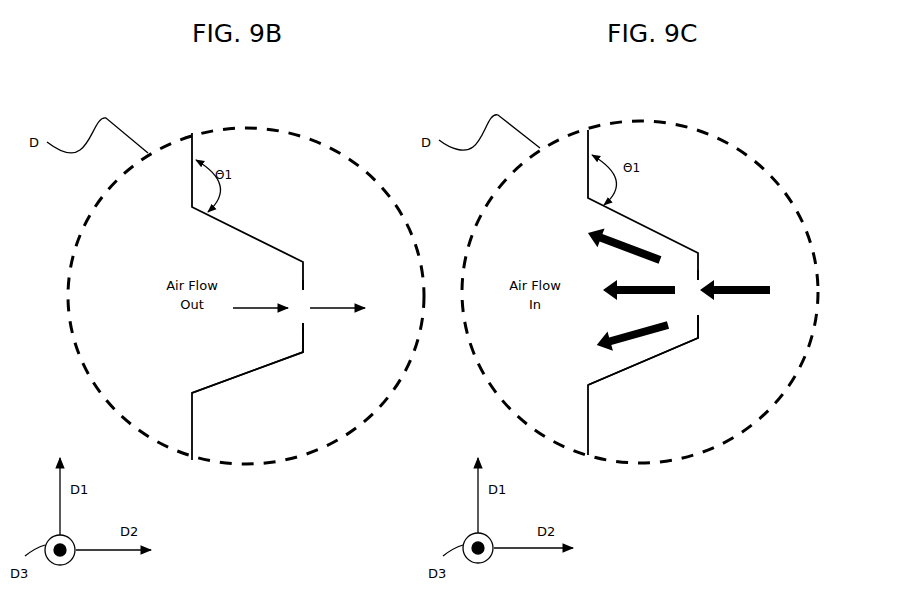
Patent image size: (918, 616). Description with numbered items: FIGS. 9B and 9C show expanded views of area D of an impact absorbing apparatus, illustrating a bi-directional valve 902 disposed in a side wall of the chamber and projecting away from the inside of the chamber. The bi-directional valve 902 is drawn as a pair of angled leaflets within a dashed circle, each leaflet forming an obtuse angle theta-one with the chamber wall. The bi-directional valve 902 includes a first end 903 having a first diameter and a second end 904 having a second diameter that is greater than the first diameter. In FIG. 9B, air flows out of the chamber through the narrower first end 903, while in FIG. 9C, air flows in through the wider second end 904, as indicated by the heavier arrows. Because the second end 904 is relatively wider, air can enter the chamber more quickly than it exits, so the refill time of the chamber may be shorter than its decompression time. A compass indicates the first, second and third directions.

In FIG. 9B, the bi-directional valve 902 is at (314, 325).
In FIG. 9C, the bi-directional valve 902 is at (716, 320).
In FIG. 9B, the first end 903 is at (306, 350).
In FIG. 9C, the first end 903 is at (704, 342).
In FIG. 9B, the second end 904 is at (187, 391).
In FIG. 9C, the second end 904 is at (585, 384).